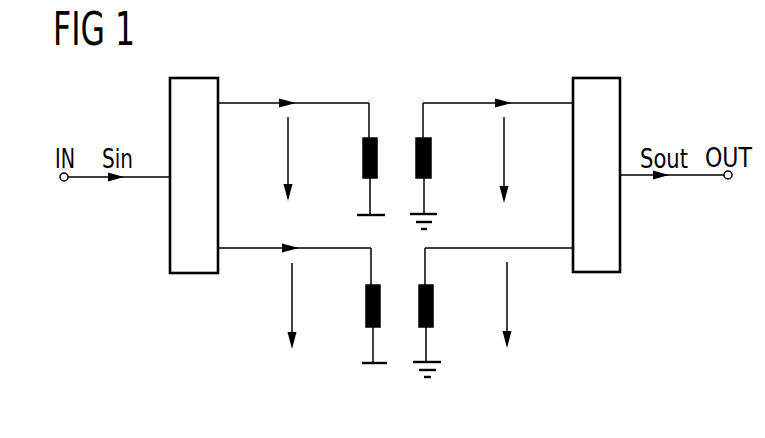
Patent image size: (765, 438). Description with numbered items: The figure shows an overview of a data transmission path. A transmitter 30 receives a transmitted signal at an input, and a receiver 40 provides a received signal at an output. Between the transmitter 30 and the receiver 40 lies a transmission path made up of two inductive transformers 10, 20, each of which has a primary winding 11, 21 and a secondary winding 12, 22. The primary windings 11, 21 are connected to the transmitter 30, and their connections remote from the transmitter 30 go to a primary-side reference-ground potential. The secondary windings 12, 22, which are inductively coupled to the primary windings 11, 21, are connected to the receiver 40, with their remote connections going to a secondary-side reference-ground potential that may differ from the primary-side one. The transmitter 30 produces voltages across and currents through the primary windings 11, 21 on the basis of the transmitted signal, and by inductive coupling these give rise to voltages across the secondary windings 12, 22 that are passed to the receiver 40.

The inductive transformer 10 is at (398, 94).
The primary winding 11 is at (363, 157).
The secondary winding 12 is at (431, 157).
The inductive transformer 20 is at (396, 368).
The primary winding 21 is at (367, 305).
The secondary winding 22 is at (433, 305).
The transmitter 30 is at (198, 273).
The receiver 40 is at (600, 272).